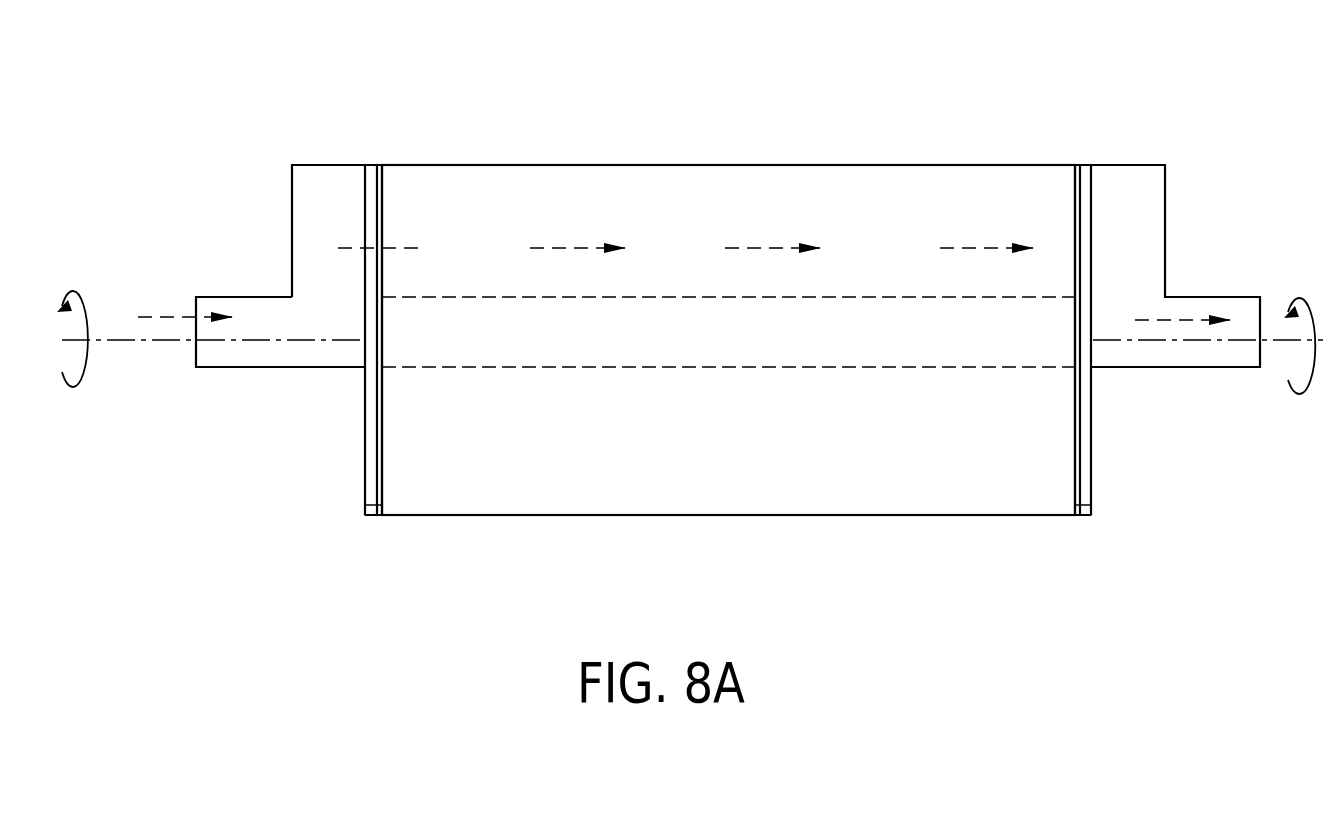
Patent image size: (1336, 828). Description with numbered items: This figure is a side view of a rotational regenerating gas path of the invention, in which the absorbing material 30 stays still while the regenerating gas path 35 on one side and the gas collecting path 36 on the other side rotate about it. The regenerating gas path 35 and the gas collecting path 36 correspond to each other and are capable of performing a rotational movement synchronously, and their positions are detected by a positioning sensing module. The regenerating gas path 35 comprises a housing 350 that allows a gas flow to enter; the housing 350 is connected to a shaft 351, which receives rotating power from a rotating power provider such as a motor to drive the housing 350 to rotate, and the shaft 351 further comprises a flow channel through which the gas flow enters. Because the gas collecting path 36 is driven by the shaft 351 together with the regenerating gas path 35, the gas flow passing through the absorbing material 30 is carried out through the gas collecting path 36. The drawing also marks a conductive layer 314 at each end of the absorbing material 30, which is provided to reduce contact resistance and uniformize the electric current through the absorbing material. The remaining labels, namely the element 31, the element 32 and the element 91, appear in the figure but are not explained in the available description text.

The roller body 30 is at (743, 178).
The first end flange 31 is at (370, 158).
The second end flange 32 is at (1086, 158).
The first shaft portion 35 is at (211, 228).
The second shaft portion 36 is at (1182, 162).
The shaft seat block 350 is at (303, 210).
The fluid passage 351 is at (548, 369).
The flange edge ring 314 is at (380, 516).
The fluid flow direction 91 is at (432, 248).